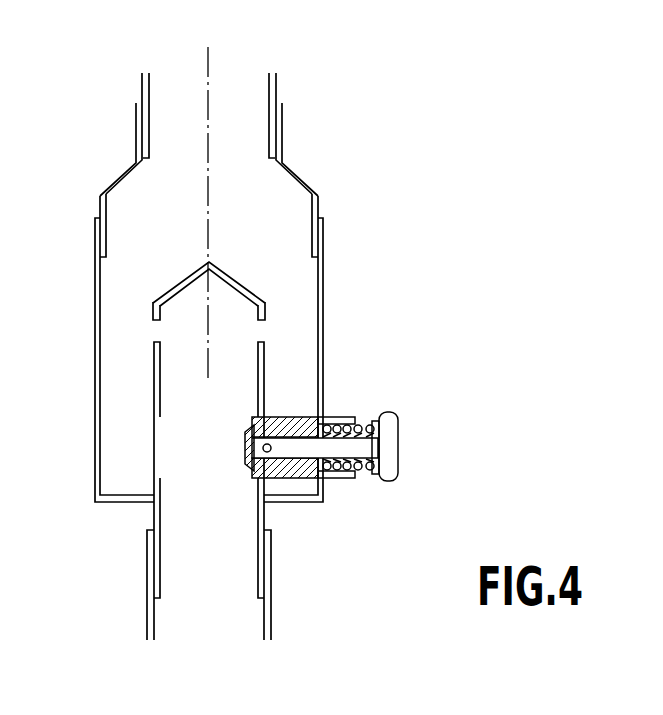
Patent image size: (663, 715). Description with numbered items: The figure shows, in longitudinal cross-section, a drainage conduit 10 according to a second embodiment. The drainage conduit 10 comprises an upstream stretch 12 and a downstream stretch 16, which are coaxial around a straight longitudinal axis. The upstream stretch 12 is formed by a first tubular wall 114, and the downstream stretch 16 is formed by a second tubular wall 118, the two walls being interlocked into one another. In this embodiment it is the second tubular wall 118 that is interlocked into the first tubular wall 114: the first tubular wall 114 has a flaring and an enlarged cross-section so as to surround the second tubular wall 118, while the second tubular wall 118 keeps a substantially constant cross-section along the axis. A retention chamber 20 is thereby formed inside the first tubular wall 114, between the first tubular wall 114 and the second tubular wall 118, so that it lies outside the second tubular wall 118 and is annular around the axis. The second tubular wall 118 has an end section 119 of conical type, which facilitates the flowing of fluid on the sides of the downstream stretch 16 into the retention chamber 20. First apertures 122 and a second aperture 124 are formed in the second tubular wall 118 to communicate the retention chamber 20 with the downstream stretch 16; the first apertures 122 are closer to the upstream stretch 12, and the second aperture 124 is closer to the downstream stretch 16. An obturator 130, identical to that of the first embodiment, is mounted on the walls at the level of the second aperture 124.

The drainage conduit 10 is at (394, 148).
The upstream stretch 12 is at (240, 119).
The downstream stretch 16 is at (250, 632).
The retention chamber 20 is at (293, 363).
The first tubular wall 114 is at (95, 255).
The second tubular wall 118 is at (156, 513).
The end section 119 is at (180, 282).
The first apertures 122 is at (157, 332).
The second aperture 124 is at (260, 488).
The obturator 130 is at (370, 500).